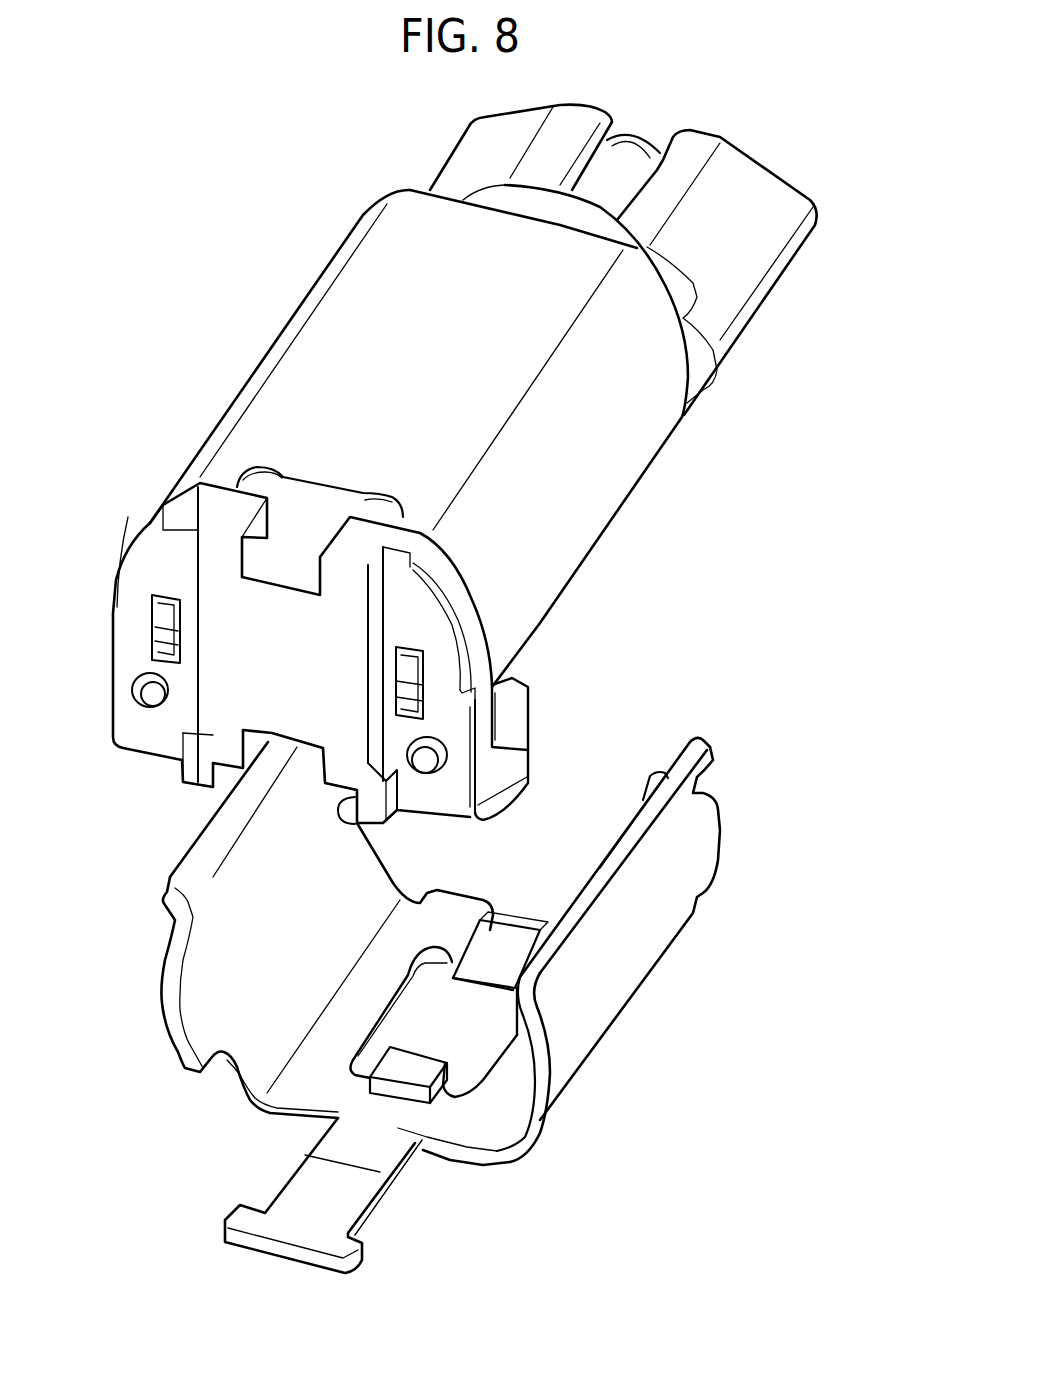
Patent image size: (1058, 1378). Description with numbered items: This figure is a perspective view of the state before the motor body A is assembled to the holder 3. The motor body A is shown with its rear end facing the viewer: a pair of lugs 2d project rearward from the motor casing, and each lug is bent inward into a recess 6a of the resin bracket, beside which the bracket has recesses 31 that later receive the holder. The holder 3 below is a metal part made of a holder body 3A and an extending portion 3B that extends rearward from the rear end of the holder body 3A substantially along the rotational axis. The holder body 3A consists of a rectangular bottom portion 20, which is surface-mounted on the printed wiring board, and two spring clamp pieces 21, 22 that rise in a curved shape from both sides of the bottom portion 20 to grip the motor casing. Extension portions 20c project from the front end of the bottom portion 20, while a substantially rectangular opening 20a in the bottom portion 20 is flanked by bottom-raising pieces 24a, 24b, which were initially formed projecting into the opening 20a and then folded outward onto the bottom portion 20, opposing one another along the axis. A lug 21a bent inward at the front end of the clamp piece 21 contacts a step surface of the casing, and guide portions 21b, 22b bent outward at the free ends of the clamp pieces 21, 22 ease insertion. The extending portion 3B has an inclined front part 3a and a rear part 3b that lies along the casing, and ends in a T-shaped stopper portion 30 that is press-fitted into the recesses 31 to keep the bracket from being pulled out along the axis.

The motor body A is at (258, 337).
The lugs 2d is at (323, 500).
The recesses 31 is at (217, 762).
The recess 6a is at (293, 767).
The holder 3 is at (434, 999).
The holder body 3A is at (617, 1023).
The extending portion 3B is at (335, 1217).
The bottom portion 20 is at (365, 984).
The opening 20a is at (433, 997).
The extension portions 20c is at (447, 895).
The clamp piece 21 is at (627, 901).
The lug 21a is at (655, 772).
The guide portion 21b is at (630, 833).
The clamp piece 22 is at (162, 930).
The guide portion 22b is at (207, 838).
The bottom-raising piece 24a is at (505, 935).
The bottom-raising piece 24b is at (413, 1065).
The stopper portion 30 is at (298, 1225).
The front part 3a is at (407, 1173).
The rear part 3b is at (377, 1210).